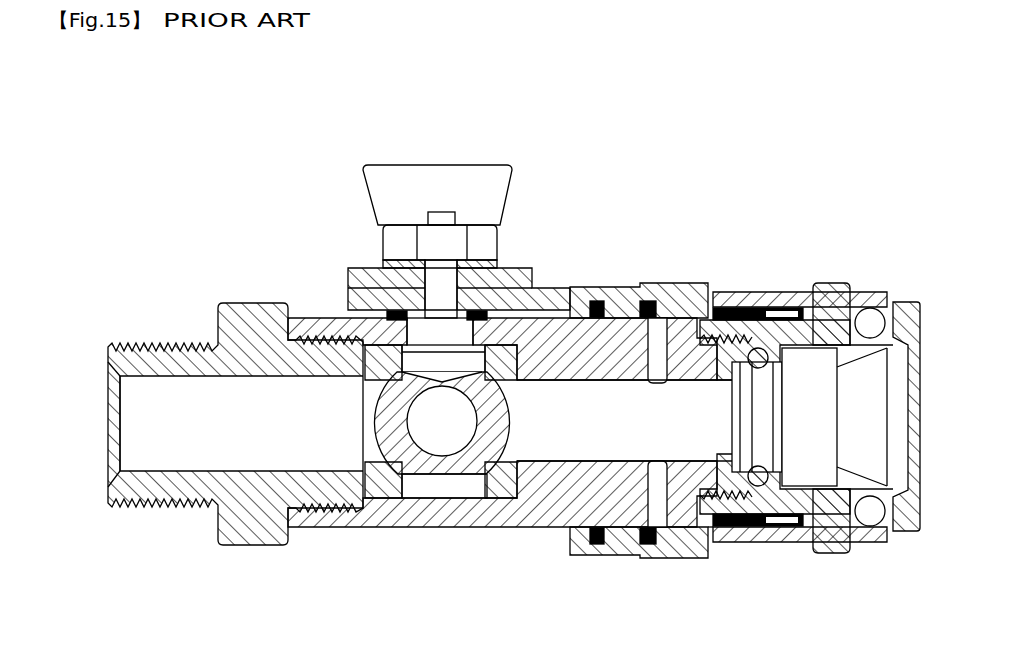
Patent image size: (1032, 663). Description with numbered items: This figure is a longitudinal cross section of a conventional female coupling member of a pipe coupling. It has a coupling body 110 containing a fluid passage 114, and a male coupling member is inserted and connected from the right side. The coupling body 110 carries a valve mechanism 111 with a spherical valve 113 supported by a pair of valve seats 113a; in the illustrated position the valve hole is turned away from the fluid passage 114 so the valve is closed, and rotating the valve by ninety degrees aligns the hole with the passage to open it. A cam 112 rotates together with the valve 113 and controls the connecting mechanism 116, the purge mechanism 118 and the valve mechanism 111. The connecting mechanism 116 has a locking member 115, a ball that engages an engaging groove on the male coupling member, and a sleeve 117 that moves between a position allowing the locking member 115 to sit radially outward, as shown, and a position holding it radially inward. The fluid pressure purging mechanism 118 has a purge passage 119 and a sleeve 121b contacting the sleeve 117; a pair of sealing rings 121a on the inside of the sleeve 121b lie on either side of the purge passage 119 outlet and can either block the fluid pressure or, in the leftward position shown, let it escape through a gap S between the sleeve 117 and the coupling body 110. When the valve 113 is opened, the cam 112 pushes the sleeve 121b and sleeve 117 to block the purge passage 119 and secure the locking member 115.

The coupling body 110 is at (330, 530).
The valve mechanism 111 is at (338, 181).
The cam 112 is at (540, 288).
The valve 113 is at (462, 482).
The valve seats 113a is at (372, 492).
The fluid passage 114 is at (180, 445).
The locking member (locking ball) 115 is at (870, 535).
The connecting mechanism 116 is at (850, 266).
The sleeve 117 is at (762, 292).
The fluid pressure purging mechanism 118 is at (652, 259).
The purge passage 119 is at (655, 463).
The sealing rings 121a is at (652, 283).
The sleeve 121b is at (690, 550).
The gap S is at (712, 557).